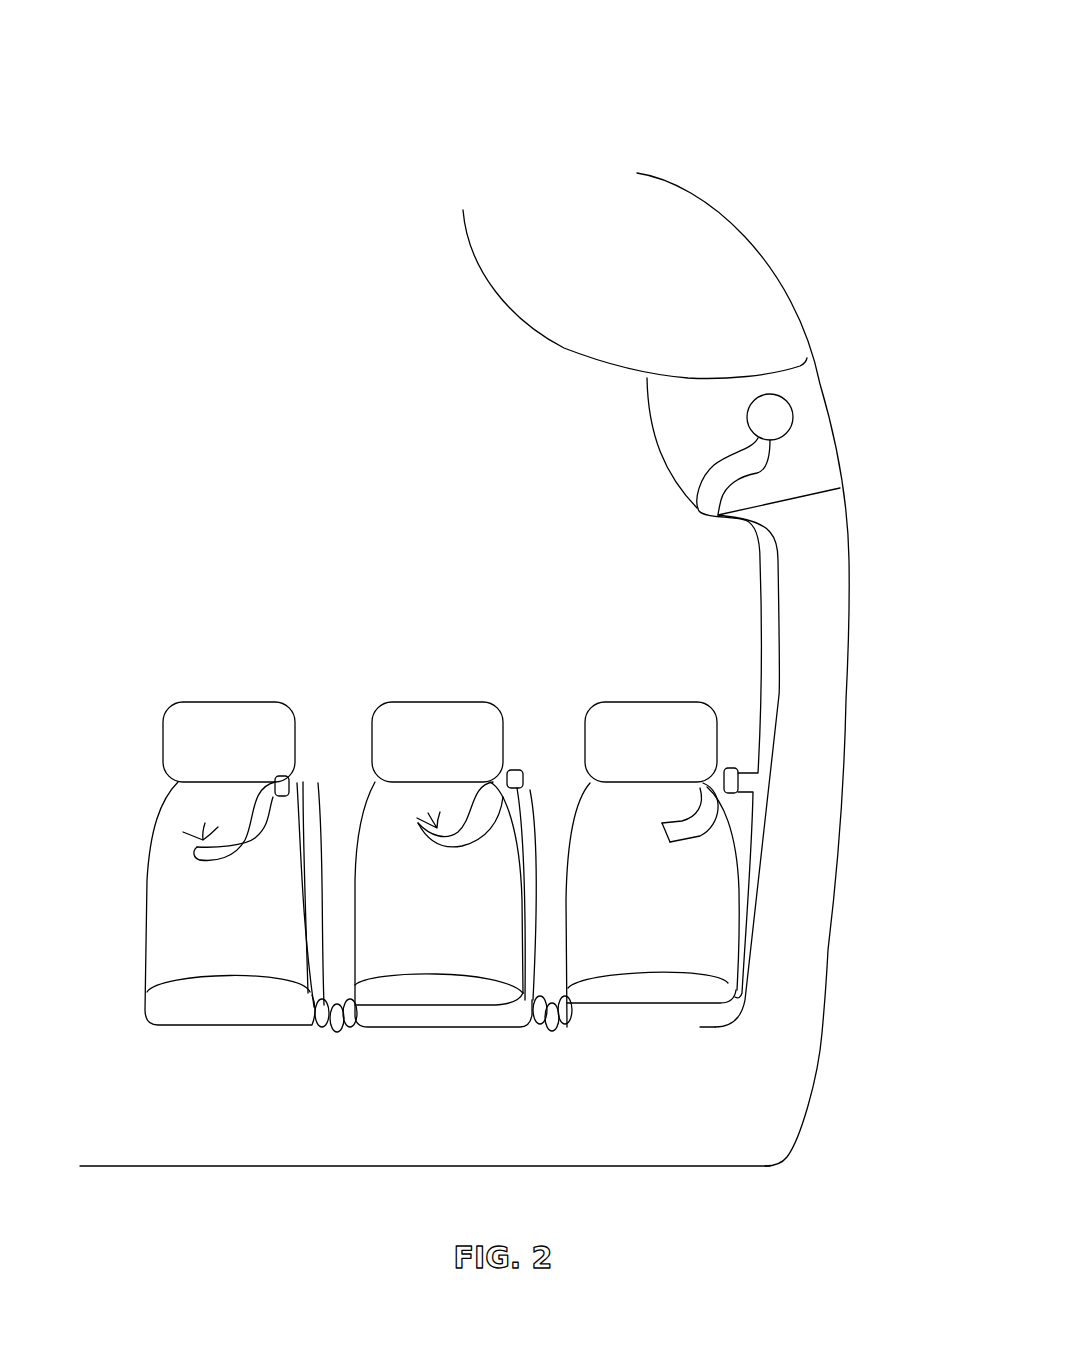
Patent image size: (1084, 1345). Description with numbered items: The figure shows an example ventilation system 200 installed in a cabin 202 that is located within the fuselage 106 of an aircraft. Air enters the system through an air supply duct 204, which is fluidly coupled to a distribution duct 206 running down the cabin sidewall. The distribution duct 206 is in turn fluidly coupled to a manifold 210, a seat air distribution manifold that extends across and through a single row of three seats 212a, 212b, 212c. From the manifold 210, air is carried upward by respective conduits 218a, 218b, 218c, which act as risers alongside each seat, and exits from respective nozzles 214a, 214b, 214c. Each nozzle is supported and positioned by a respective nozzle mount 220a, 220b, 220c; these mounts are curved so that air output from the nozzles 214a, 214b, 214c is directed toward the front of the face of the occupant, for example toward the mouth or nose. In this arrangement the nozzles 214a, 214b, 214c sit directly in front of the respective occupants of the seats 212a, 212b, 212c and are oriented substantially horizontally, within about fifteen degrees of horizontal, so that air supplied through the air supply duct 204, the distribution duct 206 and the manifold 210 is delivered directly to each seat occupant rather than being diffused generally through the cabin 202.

The ventilation system 200 is at (771, 88).
The fuselage 106 is at (838, 217).
The cabin 202 is at (244, 371).
The air supply duct 204 is at (768, 415).
The distribution duct 206 is at (762, 612).
The manifold 210 is at (716, 1030).
The seat 212a is at (245, 735).
The seat 212b is at (462, 718).
The seat 212c is at (630, 717).
The nozzle 214a is at (213, 855).
The nozzle 214b is at (433, 835).
The nozzle 214c is at (683, 843).
The conduit 218a is at (290, 773).
The conduit 218b is at (532, 810).
The conduit 218c is at (760, 782).
The nozzle mount 220a is at (242, 848).
The nozzle mount 220b is at (470, 827).
The nozzle mount 220c is at (695, 820).